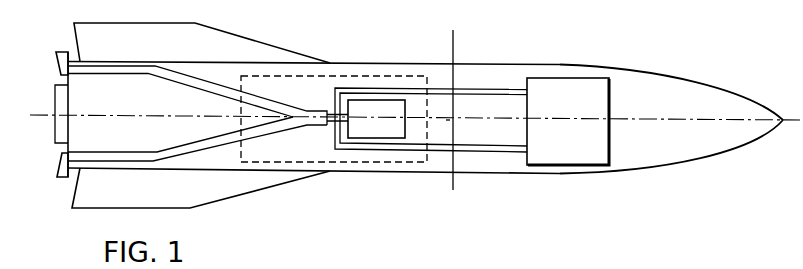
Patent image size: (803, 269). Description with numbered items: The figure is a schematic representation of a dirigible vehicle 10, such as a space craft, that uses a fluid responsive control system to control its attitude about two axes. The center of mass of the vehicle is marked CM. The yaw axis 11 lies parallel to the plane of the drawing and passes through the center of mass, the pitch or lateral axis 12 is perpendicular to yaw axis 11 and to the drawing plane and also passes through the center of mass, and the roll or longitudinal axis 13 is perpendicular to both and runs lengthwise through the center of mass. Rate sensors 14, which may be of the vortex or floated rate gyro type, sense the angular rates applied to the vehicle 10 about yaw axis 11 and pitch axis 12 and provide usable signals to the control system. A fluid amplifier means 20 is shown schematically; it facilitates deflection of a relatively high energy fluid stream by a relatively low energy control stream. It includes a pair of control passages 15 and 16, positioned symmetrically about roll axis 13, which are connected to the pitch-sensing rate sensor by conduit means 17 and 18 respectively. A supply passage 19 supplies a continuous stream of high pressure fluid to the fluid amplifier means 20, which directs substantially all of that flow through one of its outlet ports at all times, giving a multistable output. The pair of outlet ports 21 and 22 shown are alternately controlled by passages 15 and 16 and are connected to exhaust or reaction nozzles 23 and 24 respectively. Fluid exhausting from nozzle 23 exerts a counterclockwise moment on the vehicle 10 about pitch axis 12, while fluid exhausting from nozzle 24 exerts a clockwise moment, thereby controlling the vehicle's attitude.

The dirigible vehicle 10 is at (659, 49).
The yaw axis 11 is at (453, 39).
The pitch axis 12 is at (461, 130).
The roll axis 13 is at (695, 120).
The rate sensors 14 is at (572, 144).
The control passage 15 is at (333, 89).
The control passage 16 is at (333, 148).
The conduit means 17 is at (472, 77).
The conduit means 18 is at (465, 153).
The supply passage 19 is at (378, 128).
The fluid amplifier means 20 is at (398, 163).
The outlet port 21 is at (255, 96).
The outlet port 22 is at (268, 134).
The exhaust nozzle 23 is at (60, 51).
The exhaust nozzle 24 is at (58, 165).